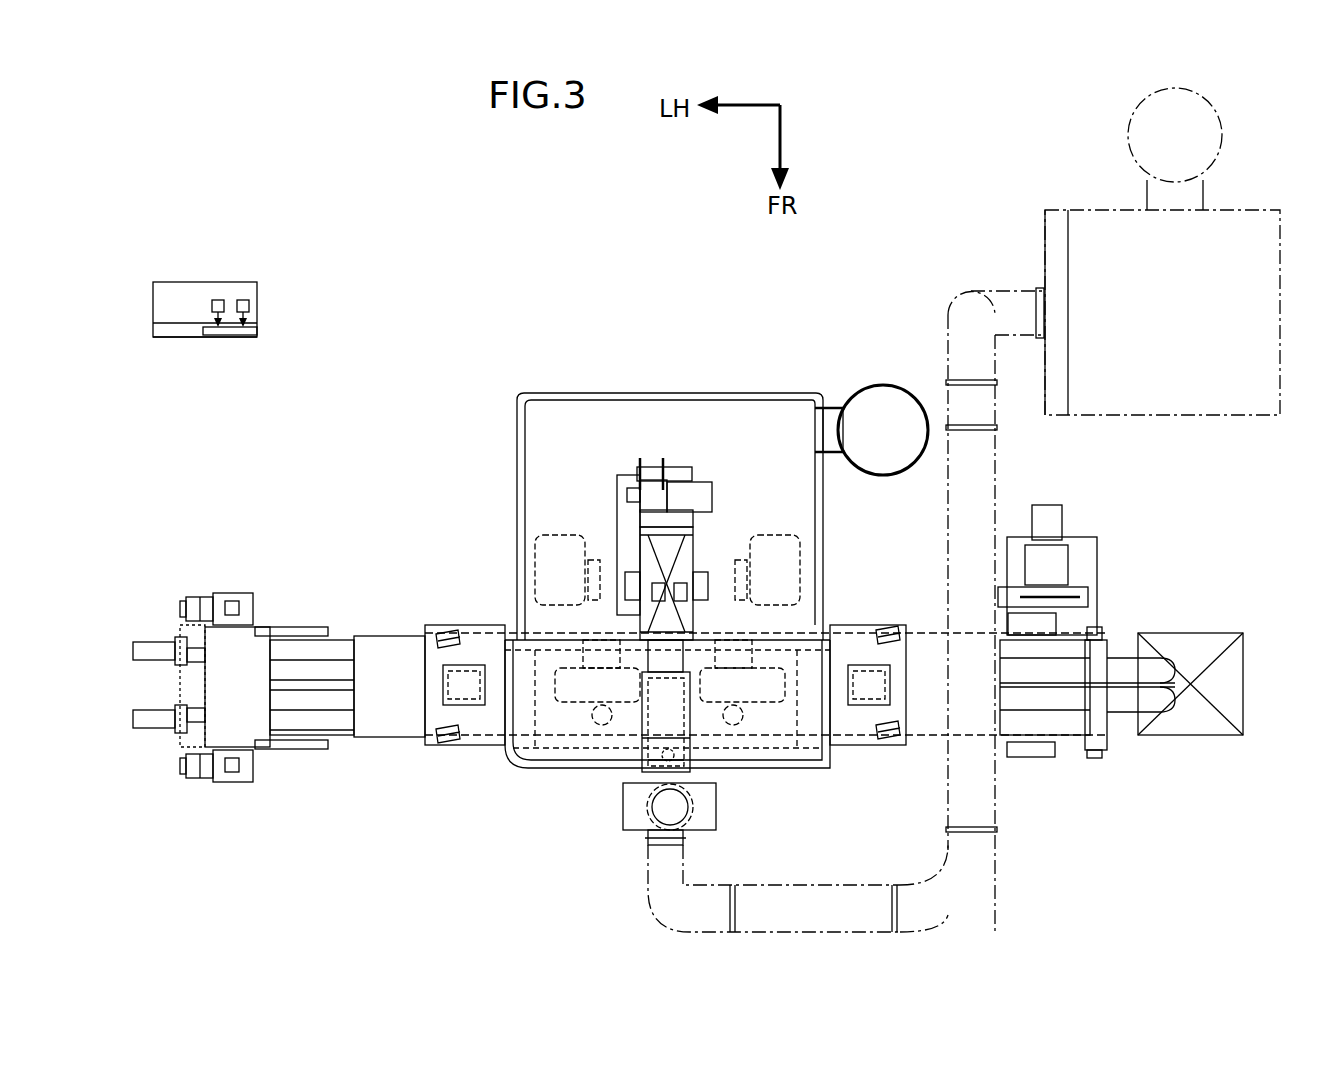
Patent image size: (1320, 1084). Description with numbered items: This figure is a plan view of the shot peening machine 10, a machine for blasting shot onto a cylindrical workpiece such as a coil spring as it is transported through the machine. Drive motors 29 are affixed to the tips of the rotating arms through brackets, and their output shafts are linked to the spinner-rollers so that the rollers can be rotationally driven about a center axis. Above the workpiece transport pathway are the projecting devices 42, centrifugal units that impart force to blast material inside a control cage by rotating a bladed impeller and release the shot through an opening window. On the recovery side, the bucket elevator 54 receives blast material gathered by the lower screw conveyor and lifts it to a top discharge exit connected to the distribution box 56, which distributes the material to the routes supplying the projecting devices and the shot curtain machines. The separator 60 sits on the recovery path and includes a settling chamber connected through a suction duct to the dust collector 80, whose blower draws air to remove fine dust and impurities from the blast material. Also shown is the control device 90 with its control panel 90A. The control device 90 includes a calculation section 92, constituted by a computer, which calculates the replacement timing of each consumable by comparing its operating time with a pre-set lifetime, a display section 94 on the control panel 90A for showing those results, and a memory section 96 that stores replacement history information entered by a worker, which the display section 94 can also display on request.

The shot peening machine 10 is at (520, 300).
The drive motors 29 is at (150, 646).
The projecting devices 42 is at (582, 720).
The bucket elevator 54 is at (695, 541).
The distribution box 56 is at (688, 656).
The separator 60 is at (688, 722).
The dust collector 80 is at (1225, 210).
The control device 90 is at (285, 290).
The control panel 90A is at (172, 338).
The calculation section 92 is at (243, 298).
The display section 94 is at (235, 337).
The memory section 96 is at (218, 298).